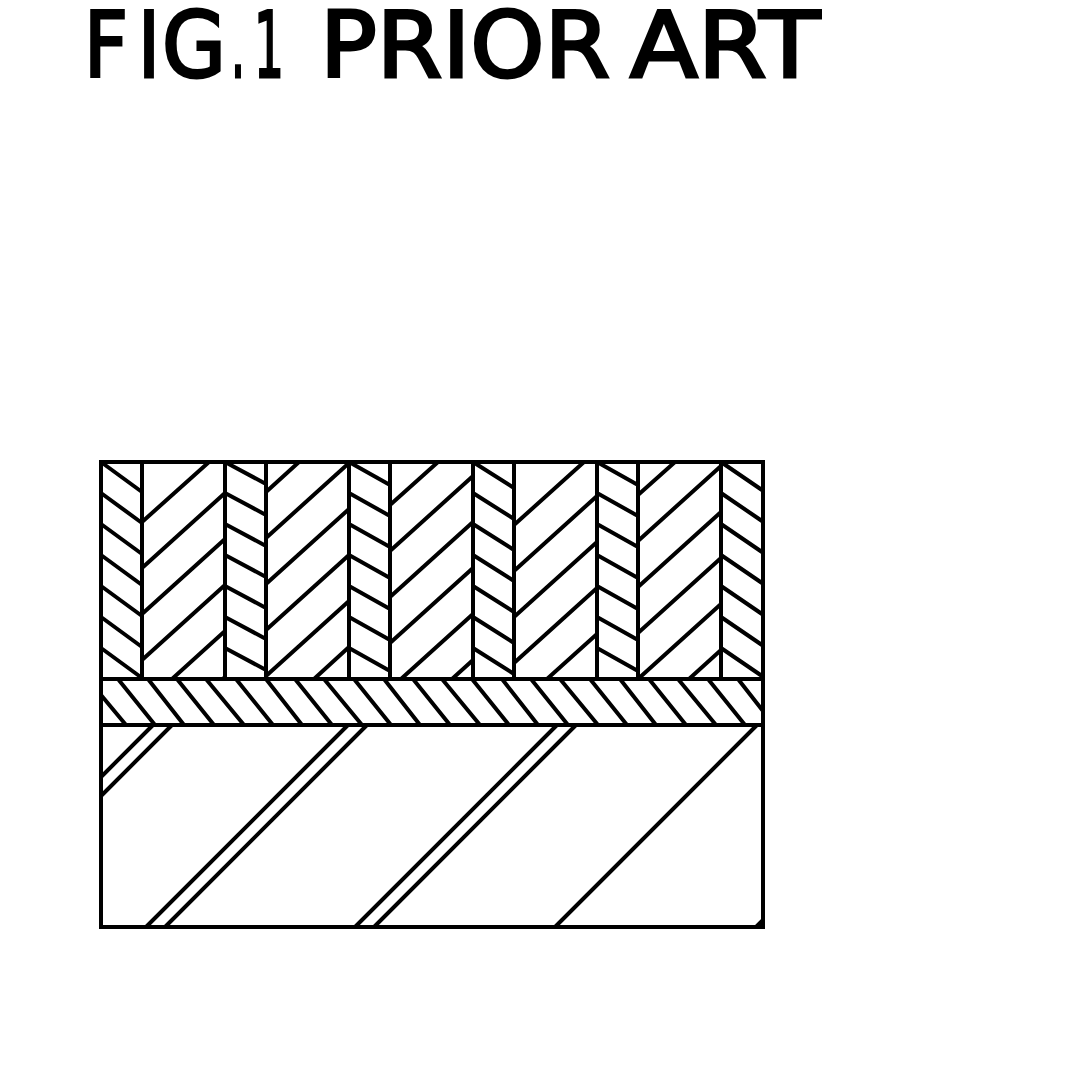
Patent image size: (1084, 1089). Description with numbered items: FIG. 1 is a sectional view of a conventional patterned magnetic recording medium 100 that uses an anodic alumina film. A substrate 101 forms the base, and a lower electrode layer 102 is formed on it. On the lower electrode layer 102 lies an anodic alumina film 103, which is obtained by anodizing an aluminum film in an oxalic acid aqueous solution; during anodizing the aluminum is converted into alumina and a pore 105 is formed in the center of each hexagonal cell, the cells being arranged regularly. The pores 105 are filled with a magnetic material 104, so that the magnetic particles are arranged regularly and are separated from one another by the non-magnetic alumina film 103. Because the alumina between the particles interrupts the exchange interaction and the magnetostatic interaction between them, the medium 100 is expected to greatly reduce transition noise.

The magnetic recording medium 100 is at (178, 257).
The substrate 101 is at (524, 826).
The lower electrode layer 102 is at (527, 699).
The anodic alumina film 103 is at (503, 505).
The magnetic material 104 is at (431, 474).
The pores 105 is at (442, 483).